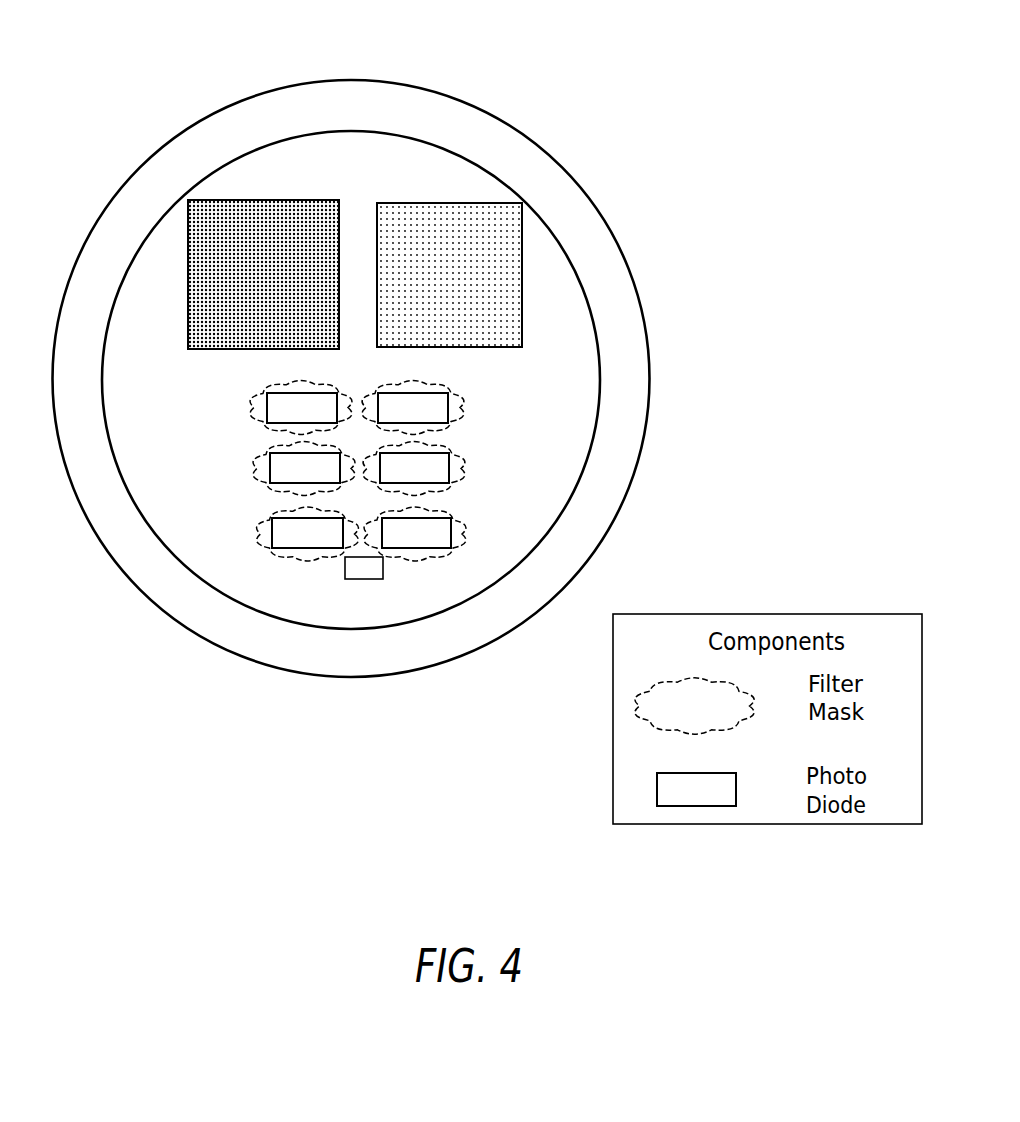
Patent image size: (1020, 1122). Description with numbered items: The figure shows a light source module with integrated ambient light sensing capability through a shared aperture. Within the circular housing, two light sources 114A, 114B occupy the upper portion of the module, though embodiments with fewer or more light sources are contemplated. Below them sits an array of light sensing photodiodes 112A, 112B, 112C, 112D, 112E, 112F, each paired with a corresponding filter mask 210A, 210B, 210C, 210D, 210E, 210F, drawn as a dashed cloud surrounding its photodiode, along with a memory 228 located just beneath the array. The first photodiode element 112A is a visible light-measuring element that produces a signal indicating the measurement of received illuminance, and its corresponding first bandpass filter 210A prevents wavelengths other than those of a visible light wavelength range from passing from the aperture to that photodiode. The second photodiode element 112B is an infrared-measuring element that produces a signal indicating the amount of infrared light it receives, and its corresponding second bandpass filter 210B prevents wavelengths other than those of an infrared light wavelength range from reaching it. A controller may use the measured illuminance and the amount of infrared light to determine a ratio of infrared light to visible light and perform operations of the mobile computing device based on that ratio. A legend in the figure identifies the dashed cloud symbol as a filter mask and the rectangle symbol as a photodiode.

The light source 114A is at (252, 220).
The light source 114B is at (478, 233).
The first bandpass filter 210A is at (255, 403).
The second bandpass filter 210B is at (457, 402).
The filter mask 210C is at (259, 462).
The filter mask 210D is at (458, 463).
The filter mask 210E is at (262, 529).
The filter mask 210F is at (460, 527).
The first visible light-measuring photodiode element 112A is at (302, 408).
The second infrared-measuring photodiode element 112B is at (413, 408).
The photodiode 112C is at (305, 468).
The photodiode 112D is at (414, 468).
The photodiode 112E is at (307, 533).
The photodiode 112F is at (416, 533).
The memory 228 is at (358, 574).